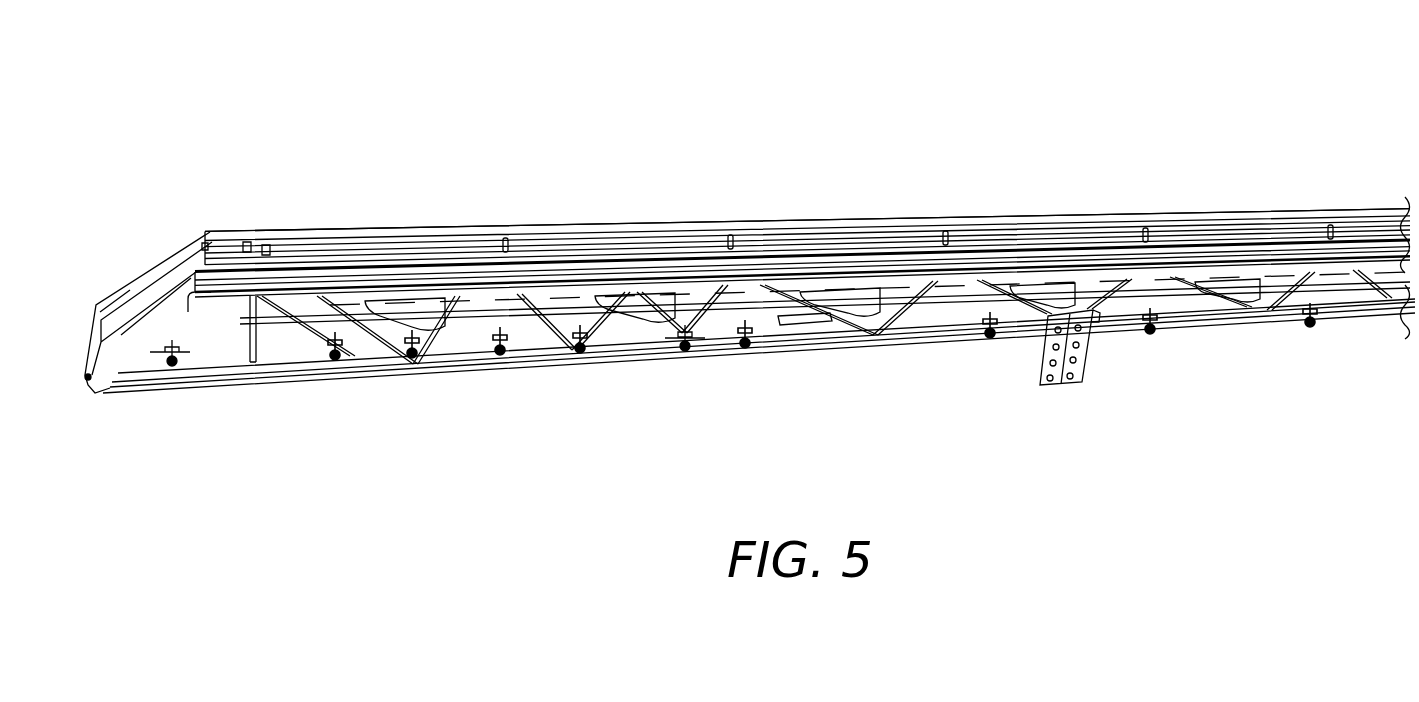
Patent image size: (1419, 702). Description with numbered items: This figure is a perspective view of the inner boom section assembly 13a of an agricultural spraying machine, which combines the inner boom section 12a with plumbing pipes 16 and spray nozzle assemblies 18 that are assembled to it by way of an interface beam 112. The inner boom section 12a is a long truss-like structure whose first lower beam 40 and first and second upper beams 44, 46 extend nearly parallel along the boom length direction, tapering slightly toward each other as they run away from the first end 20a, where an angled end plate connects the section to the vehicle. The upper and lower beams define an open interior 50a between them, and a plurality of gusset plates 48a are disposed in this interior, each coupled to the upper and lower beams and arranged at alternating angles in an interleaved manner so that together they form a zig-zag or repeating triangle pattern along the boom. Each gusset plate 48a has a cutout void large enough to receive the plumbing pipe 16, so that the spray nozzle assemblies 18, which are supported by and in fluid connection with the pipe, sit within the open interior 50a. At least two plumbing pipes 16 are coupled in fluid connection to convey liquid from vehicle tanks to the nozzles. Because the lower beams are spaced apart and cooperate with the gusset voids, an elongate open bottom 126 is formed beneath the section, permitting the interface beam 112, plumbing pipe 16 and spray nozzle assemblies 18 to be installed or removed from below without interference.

The inner boom section 12a is at (930, 375).
The inner boom section assembly 13a is at (1005, 121).
The plumbing pipe 16 is at (547, 330).
The spray nozzle assembly 18 is at (352, 358).
The first end 20a is at (172, 172).
The first lower beam 40 is at (253, 366).
The first upper beam 44 is at (300, 272).
The second upper beam 46 is at (385, 237).
The gusset plate 48a is at (815, 290).
The open interior 50a is at (795, 325).
The interface beam 112 is at (510, 300).
The open bottom 126 is at (160, 345).